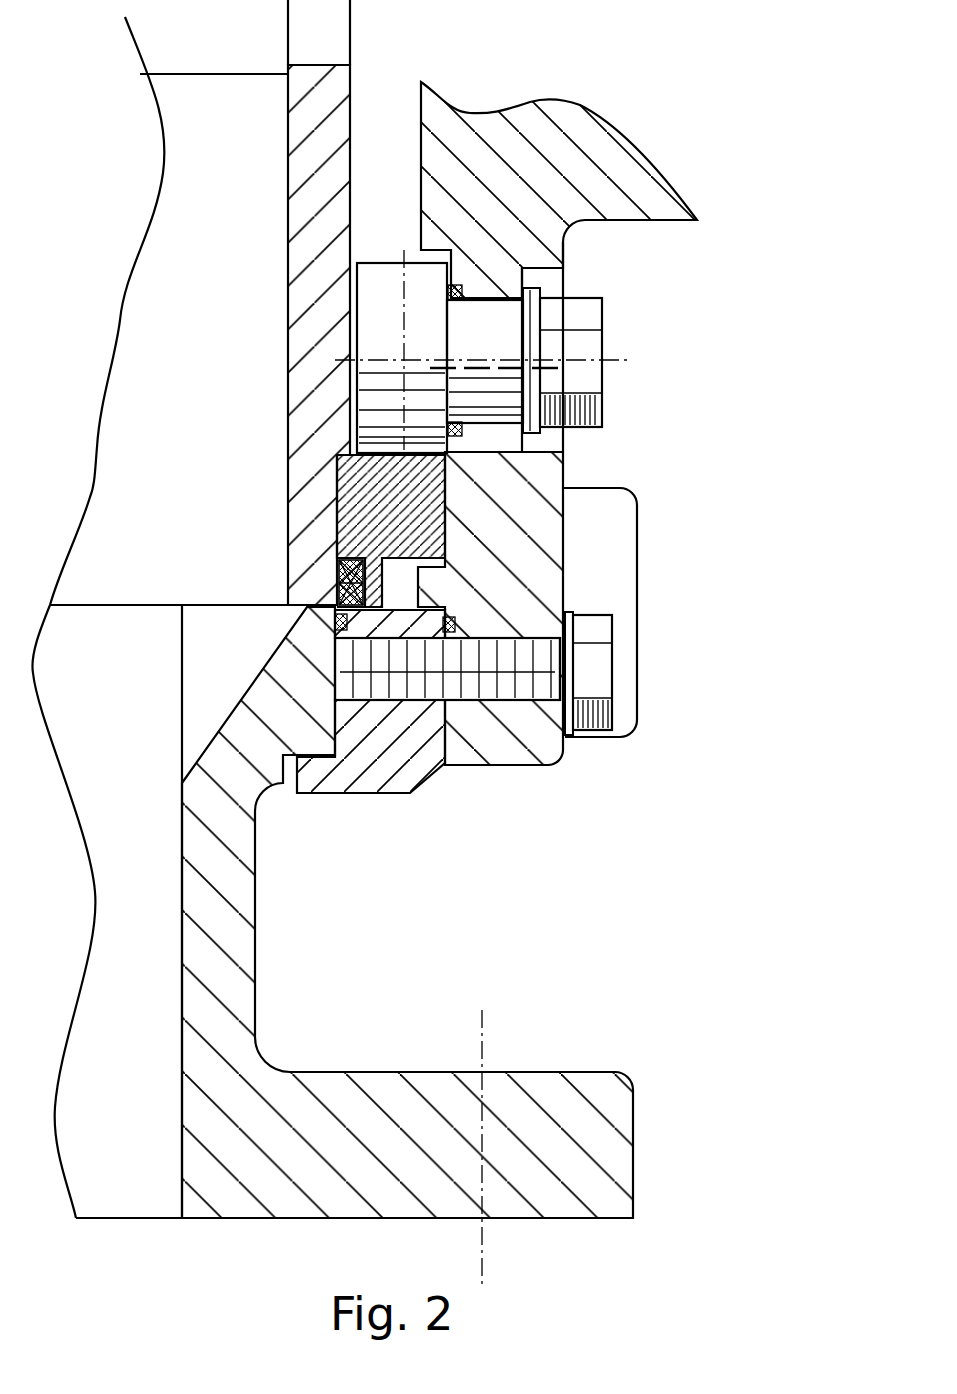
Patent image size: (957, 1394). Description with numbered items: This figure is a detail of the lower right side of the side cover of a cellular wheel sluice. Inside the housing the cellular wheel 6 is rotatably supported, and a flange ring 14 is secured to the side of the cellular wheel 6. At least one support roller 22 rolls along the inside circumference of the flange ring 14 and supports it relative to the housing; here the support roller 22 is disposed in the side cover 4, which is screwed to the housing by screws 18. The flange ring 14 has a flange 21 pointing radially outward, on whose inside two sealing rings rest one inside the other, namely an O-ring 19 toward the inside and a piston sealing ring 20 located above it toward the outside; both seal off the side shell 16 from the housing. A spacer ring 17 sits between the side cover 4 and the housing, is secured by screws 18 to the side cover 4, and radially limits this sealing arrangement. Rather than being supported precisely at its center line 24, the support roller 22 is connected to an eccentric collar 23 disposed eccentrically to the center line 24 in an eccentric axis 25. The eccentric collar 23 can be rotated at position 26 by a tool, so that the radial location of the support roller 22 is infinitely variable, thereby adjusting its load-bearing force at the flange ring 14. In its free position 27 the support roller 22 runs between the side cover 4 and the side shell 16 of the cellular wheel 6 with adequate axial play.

The side cover 4 is at (590, 145).
The cellular wheel 6 is at (230, 132).
The flange ring 14 is at (367, 500).
The side shell 16 is at (322, 236).
The spacer ring 17 is at (360, 767).
The screws 18 is at (398, 680).
The O-ring 19 is at (337, 565).
The piston sealing ring 20 is at (333, 593).
The flange 21 is at (388, 590).
The support roller 22 is at (380, 337).
The eccentric collar 23 is at (487, 410).
The center line 24 is at (503, 358).
The eccentric axis 25 is at (552, 368).
The position 26 is at (568, 348).
The free position 27 is at (390, 223).